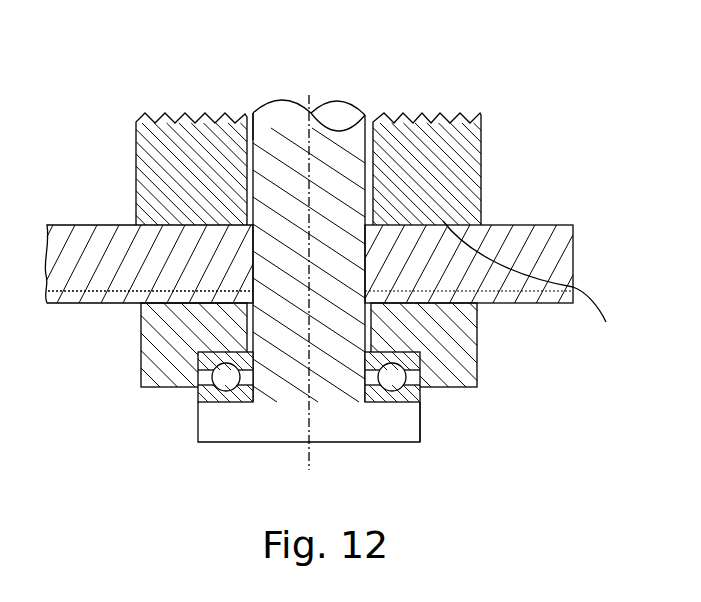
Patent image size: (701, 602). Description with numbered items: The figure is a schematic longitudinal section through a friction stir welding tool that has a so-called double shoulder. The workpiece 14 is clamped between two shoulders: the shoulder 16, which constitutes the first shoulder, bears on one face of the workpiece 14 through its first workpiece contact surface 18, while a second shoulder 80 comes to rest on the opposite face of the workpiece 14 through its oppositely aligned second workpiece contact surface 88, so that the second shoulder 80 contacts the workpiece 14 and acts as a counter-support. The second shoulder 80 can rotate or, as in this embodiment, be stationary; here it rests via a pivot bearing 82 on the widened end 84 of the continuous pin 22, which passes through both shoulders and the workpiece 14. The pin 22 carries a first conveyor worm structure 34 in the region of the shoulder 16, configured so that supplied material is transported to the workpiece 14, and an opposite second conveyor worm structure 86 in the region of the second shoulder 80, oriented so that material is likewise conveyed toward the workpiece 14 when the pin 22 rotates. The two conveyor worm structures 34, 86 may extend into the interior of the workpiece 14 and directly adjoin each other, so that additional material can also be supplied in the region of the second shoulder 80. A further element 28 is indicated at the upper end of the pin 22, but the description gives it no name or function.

The workpiece 14 is at (550, 248).
The shoulder 16 is at (462, 140).
The first workpiece contact surface 18 is at (534, 287).
The pin 22 is at (335, 131).
The shaft edge 28 is at (247, 103).
The first conveyor worm structure 34 is at (281, 118).
The second shoulder 80 is at (470, 330).
The pivot bearing 82 is at (423, 395).
The widened end 84 is at (275, 407).
The second conveyor worm structure 86 is at (330, 386).
The second workpiece contact surface 88 is at (163, 297).